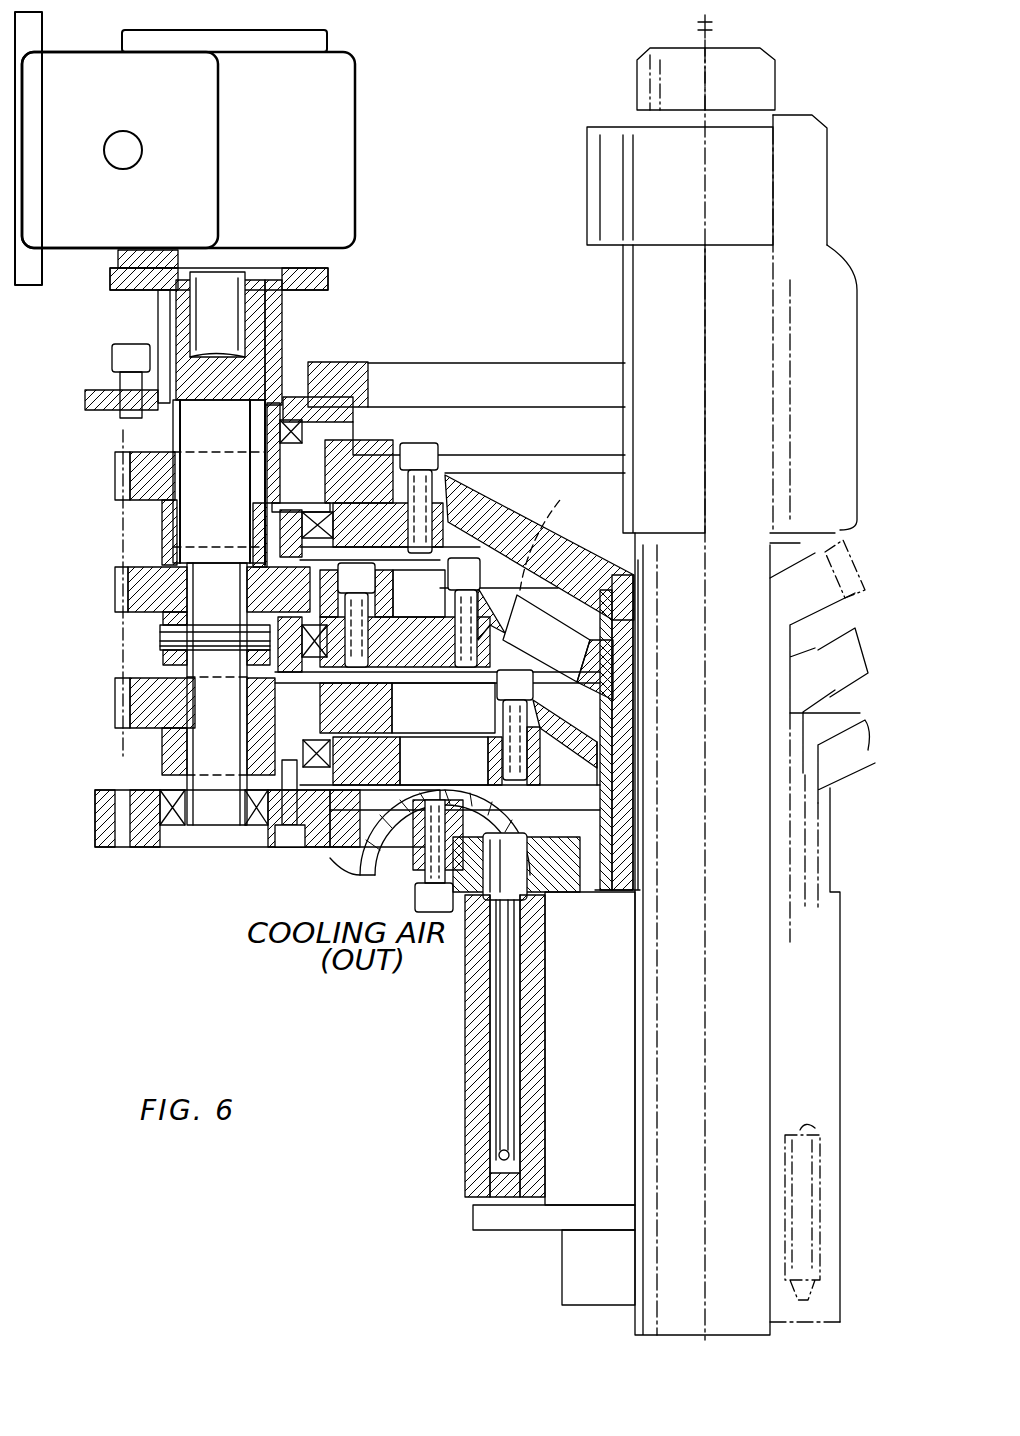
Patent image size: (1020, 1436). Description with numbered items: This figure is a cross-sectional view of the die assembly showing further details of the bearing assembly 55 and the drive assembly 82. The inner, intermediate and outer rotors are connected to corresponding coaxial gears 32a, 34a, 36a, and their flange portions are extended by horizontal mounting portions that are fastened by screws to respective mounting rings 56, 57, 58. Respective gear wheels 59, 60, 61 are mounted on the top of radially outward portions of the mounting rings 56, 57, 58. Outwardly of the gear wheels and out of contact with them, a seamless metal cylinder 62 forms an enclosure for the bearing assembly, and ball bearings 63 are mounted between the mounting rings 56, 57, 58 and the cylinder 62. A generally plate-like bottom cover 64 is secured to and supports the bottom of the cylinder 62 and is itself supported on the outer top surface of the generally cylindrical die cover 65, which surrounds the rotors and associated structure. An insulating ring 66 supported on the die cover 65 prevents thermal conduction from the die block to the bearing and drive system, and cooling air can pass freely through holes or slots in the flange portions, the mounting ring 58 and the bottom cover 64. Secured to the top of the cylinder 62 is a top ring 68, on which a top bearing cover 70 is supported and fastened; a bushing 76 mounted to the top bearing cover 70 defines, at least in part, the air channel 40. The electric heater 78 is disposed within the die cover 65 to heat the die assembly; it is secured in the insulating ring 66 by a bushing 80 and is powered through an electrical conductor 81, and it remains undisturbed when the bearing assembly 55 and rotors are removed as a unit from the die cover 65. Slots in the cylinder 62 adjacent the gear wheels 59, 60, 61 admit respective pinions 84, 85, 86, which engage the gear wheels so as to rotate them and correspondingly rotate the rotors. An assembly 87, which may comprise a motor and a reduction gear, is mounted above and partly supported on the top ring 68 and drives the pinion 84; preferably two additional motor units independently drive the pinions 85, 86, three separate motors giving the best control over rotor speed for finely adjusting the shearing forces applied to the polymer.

The coaxial gear 32a is at (630, 697).
The coaxial gear 34a is at (605, 770).
The coaxial gear 36a is at (615, 862).
The air channel 40 is at (637, 90).
The bearing assembly 55 is at (474, 343).
The mounting ring 56 is at (500, 500).
The mounting ring 57 is at (440, 600).
The mounting ring 58 is at (398, 752).
The gear wheel 59 is at (395, 462).
The gear wheel 60 is at (382, 588).
The gear wheel 61 is at (392, 706).
The seamless metal cylinder 62 is at (268, 432).
The ball bearings 63 is at (300, 525).
The bottom cover 64 is at (335, 850).
The die cover 65 is at (470, 1063).
The insulating ring 66 is at (470, 900).
The top ring 68 is at (340, 424).
The top bearing cover 70 is at (338, 360).
The bushing 76 is at (587, 212).
The electric heater 78 is at (498, 1128).
The bushing 80 is at (548, 915).
The electrical conductor 81 is at (342, 868).
The drive assembly 82 is at (364, 298).
The pinion 84 is at (115, 470).
The pinion 85 is at (115, 592).
The pinion 86 is at (115, 702).
The motor assembly 87 is at (390, 144).